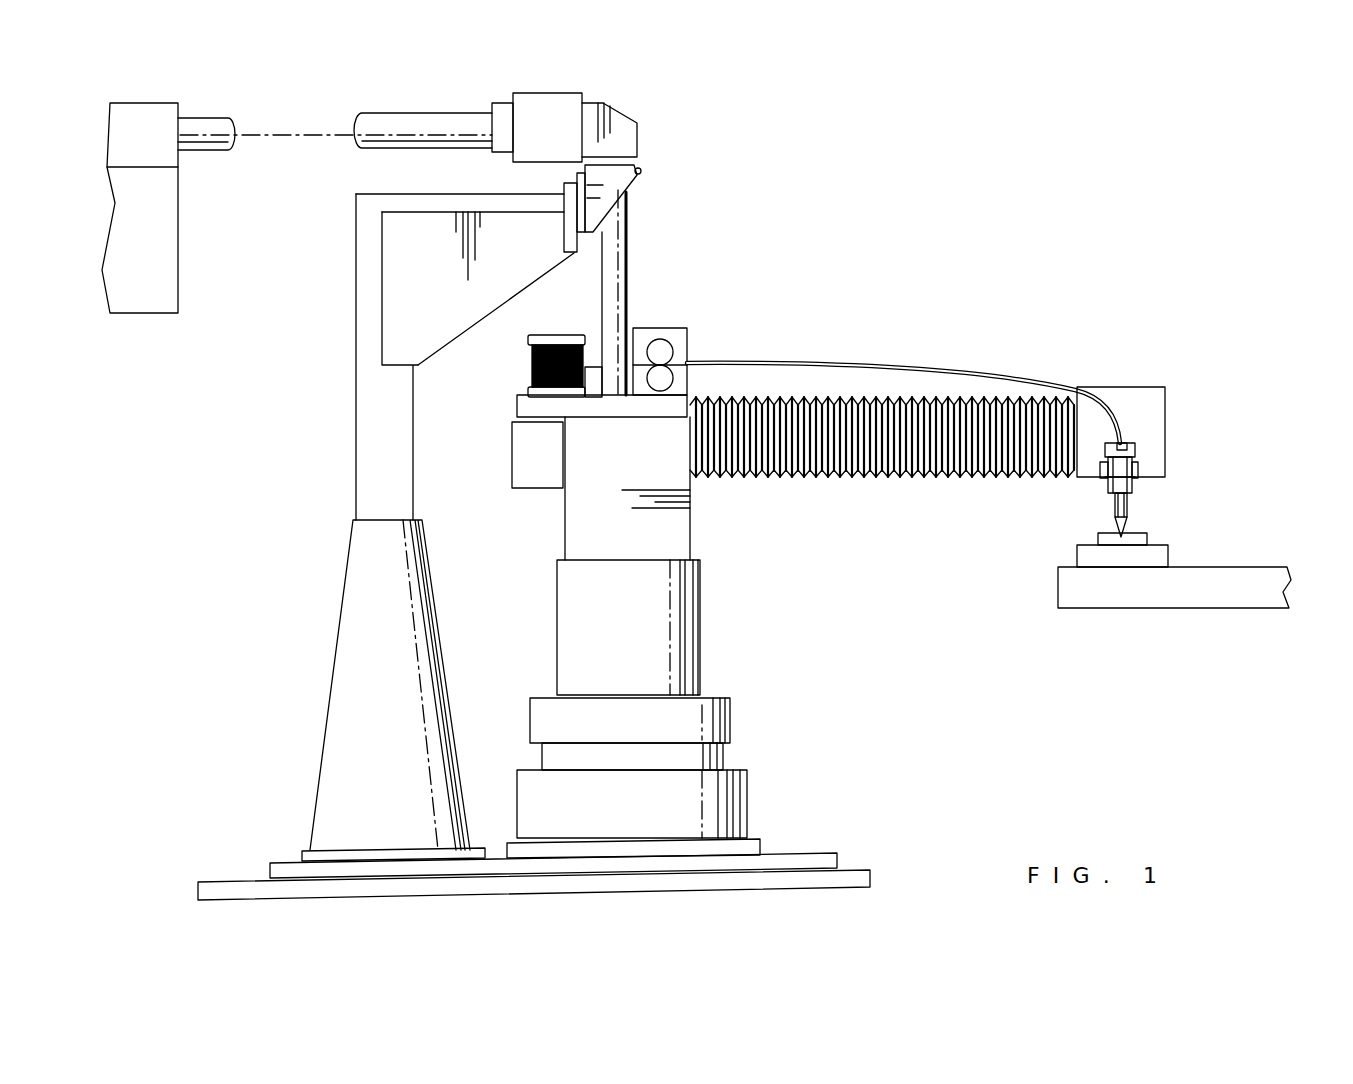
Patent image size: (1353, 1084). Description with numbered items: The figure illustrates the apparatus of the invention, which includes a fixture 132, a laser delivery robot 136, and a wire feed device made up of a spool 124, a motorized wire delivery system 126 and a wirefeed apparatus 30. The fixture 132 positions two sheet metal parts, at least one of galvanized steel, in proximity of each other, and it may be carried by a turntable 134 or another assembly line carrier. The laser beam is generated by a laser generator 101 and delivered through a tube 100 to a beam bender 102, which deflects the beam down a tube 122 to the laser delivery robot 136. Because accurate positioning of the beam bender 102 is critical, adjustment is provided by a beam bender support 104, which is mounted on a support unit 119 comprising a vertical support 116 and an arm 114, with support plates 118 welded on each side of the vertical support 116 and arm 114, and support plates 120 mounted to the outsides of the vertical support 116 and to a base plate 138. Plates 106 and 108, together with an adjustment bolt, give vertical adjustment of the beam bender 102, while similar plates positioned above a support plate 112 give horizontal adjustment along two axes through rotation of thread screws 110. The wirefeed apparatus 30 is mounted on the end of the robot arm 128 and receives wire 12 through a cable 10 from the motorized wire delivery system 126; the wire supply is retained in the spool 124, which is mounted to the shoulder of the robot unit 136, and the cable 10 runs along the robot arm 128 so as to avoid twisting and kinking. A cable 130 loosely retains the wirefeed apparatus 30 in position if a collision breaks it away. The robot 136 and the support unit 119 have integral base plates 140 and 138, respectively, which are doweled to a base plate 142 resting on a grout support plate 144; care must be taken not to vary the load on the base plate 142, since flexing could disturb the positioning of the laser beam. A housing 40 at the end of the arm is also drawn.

The cable 10 is at (887, 367).
The wire 12 is at (594, 363).
The wirefeed apparatus 30 is at (1138, 495).
The nozzle housing 40 is at (1167, 430).
The tube 100 is at (385, 113).
The laser generator 101 is at (190, 183).
The beam bender 102 is at (627, 113).
The beam bender support 104 is at (630, 193).
The plate 106 is at (563, 185).
The plate 108 is at (580, 218).
The thread screw 110 is at (643, 170).
The support plate 112 is at (619, 179).
The arm 114 is at (400, 200).
The vertical support 116 is at (363, 342).
The support plate 118 is at (443, 318).
The support unit 119 is at (343, 475).
The support plate 120 is at (362, 620).
The tube 122 is at (608, 260).
The spool 124 is at (555, 330).
The motorized wire delivery system 126 is at (673, 350).
The robot arm 128 is at (920, 468).
The cable 130 is at (1108, 488).
The fixture 132 is at (1080, 550).
The turntable 134 is at (1198, 595).
The laser delivery robot 136 is at (706, 631).
The base plate 138 is at (307, 857).
The base plate 140 is at (752, 845).
The base plate 142 is at (288, 872).
The grout support plate 144 is at (853, 877).